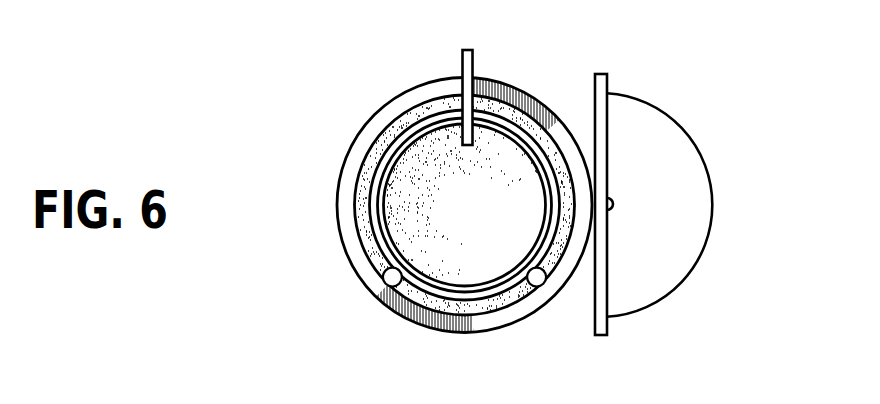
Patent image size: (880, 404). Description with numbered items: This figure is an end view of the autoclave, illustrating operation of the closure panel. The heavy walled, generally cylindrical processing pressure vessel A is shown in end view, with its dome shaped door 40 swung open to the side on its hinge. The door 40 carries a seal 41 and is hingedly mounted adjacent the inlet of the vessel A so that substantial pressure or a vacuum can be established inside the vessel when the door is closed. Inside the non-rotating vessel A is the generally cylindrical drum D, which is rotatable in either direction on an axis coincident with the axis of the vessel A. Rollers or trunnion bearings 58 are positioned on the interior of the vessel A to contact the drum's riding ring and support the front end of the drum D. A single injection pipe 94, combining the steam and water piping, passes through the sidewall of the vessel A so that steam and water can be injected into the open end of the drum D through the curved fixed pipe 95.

The dome shaped door 40 is at (700, 194).
The seal 41 is at (594, 87).
The trunnion bearings 58 is at (386, 285).
The injection pipe 94 is at (462, 62).
The curved fixed pipe 95 is at (397, 120).
The drum D is at (487, 118).
The pressure vessel A is at (358, 170).